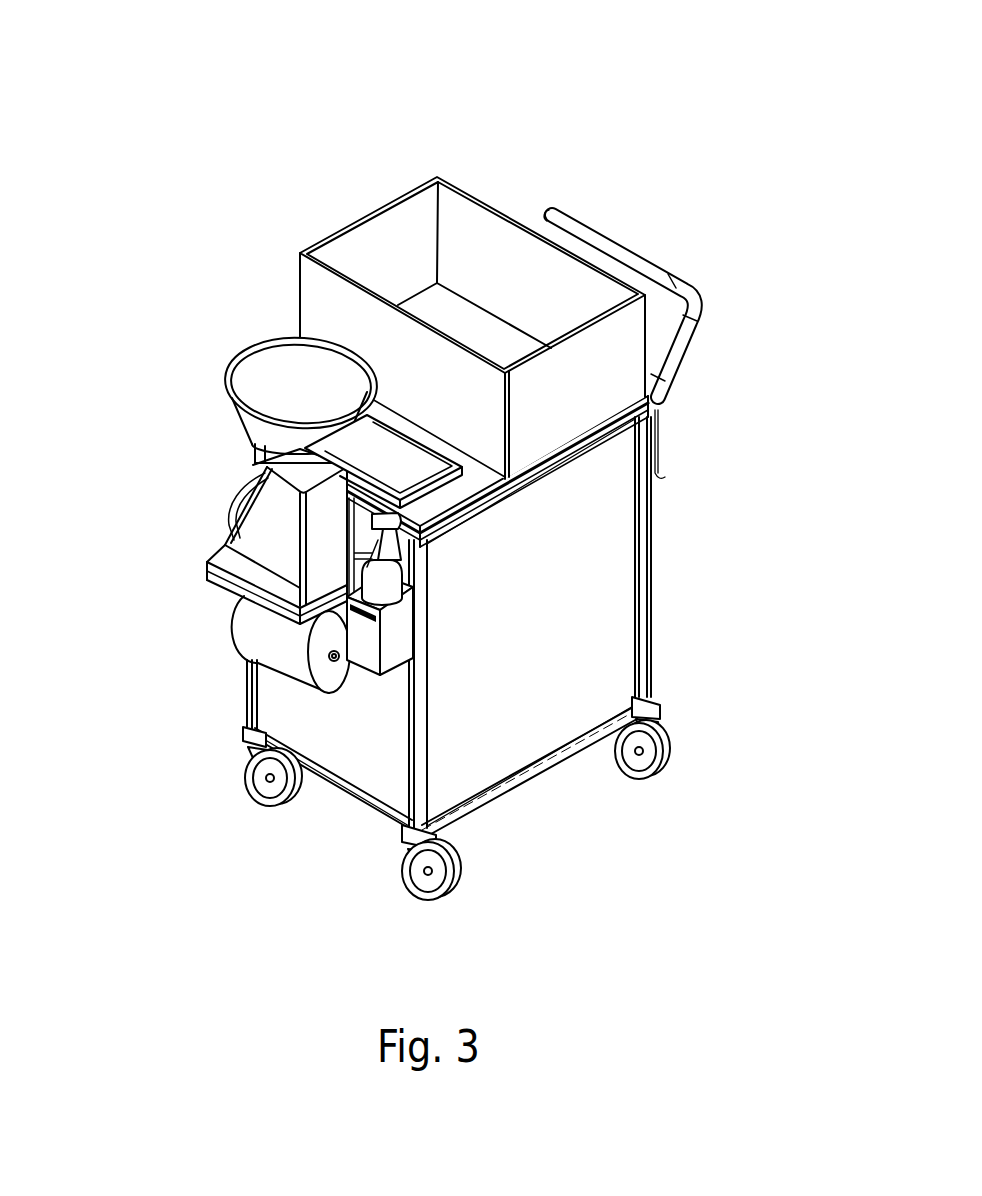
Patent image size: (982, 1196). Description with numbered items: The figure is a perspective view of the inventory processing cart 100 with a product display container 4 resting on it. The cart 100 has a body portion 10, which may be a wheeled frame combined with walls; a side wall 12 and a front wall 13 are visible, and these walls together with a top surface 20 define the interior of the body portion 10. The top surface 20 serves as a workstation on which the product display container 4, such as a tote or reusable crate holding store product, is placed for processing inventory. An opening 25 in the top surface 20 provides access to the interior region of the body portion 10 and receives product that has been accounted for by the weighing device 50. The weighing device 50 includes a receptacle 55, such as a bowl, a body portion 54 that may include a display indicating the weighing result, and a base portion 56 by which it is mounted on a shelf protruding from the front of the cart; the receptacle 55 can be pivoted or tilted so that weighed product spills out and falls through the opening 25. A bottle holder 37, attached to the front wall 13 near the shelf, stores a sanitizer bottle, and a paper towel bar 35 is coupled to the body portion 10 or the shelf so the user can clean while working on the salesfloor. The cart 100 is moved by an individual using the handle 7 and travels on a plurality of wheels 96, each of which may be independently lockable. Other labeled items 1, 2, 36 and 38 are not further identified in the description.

The inventory processing cart 100 is at (565, 100).
The cart 1 is at (748, 356).
The base / wheeled frame 2 is at (712, 711).
The product display container 4 is at (315, 282).
The handle 7 is at (668, 276).
The body portion 10 is at (620, 589).
The wall 12 is at (625, 655).
The front wall 13 is at (320, 737).
The top surface 20 is at (460, 484).
The opening 25 is at (375, 458).
The paper towel bar 35 is at (347, 673).
The paper roll 36 is at (247, 638).
The bottle holder 37 is at (377, 660).
The roll spindle hub 38 is at (328, 660).
The weighing device 50 is at (253, 546).
The body portion of the weighing device 54 is at (268, 500).
The receptacle 55 is at (248, 378).
The base portion 56 is at (215, 561).
The wheels 96 is at (250, 798).